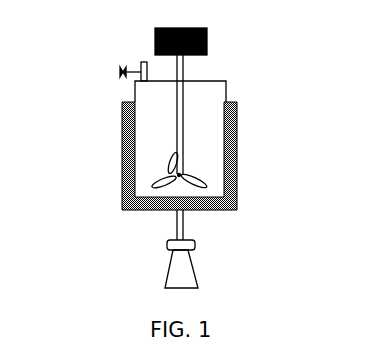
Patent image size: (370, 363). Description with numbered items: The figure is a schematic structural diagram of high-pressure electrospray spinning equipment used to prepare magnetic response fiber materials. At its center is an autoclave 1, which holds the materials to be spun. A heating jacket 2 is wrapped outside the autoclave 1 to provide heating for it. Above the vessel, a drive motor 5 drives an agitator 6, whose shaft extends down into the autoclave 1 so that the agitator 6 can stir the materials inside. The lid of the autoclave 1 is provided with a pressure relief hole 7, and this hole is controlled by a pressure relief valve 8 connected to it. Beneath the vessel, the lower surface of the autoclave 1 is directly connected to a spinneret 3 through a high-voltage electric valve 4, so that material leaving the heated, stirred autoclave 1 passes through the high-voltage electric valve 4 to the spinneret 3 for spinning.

The autoclave 1 is at (212, 102).
The autoclave heating jacket 2 is at (237, 163).
The spinneret 3 is at (197, 268).
The high-voltage electric valve 4 is at (167, 243).
The drive motor 5 is at (210, 37).
The agitator 6 is at (133, 182).
The pressure relief hole 7 is at (102, 46).
The pressure relief valve 8 is at (120, 72).